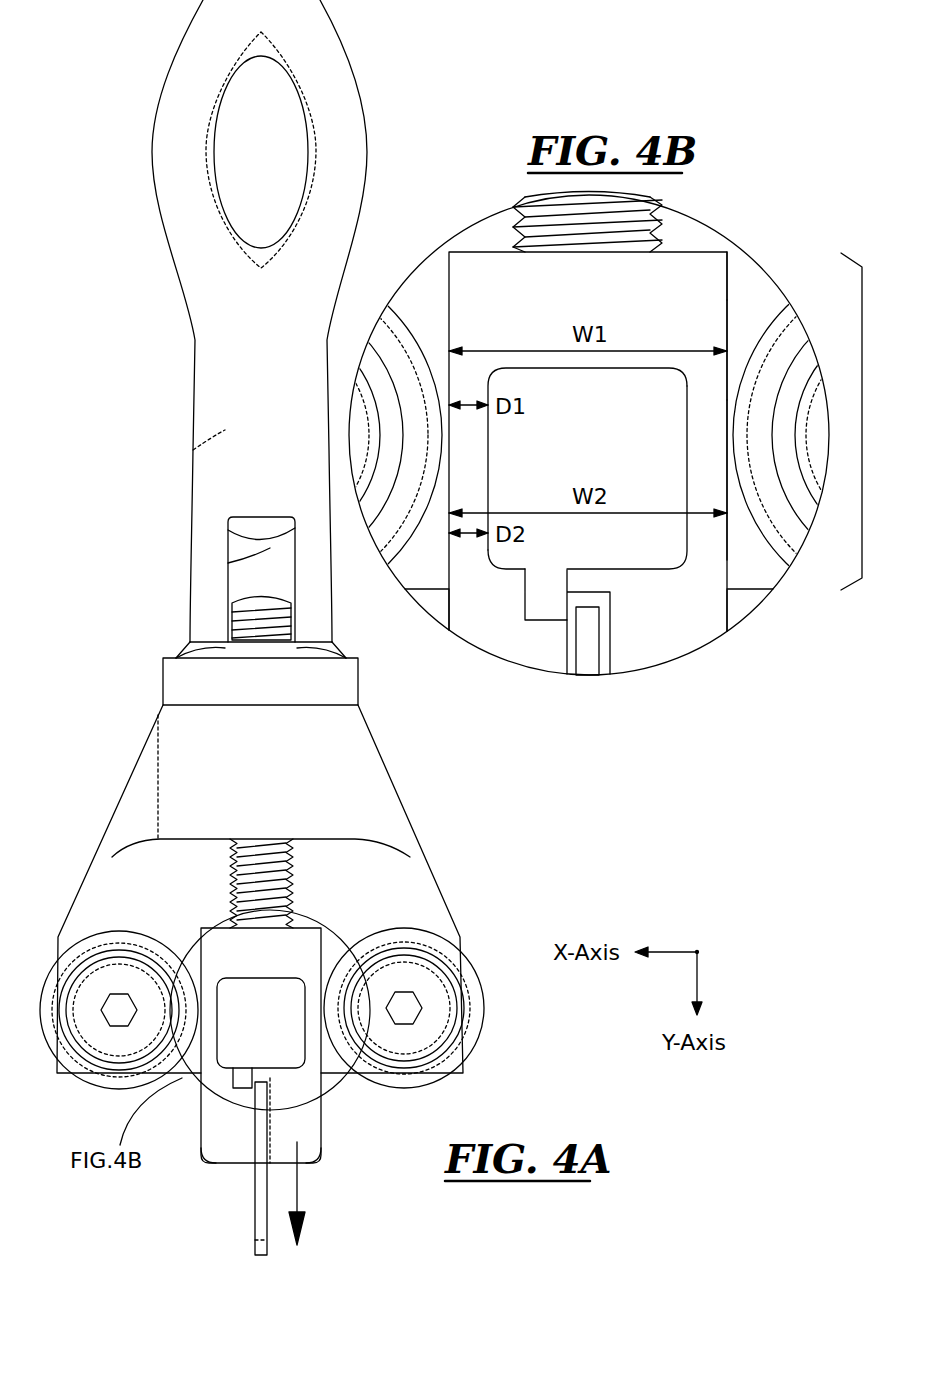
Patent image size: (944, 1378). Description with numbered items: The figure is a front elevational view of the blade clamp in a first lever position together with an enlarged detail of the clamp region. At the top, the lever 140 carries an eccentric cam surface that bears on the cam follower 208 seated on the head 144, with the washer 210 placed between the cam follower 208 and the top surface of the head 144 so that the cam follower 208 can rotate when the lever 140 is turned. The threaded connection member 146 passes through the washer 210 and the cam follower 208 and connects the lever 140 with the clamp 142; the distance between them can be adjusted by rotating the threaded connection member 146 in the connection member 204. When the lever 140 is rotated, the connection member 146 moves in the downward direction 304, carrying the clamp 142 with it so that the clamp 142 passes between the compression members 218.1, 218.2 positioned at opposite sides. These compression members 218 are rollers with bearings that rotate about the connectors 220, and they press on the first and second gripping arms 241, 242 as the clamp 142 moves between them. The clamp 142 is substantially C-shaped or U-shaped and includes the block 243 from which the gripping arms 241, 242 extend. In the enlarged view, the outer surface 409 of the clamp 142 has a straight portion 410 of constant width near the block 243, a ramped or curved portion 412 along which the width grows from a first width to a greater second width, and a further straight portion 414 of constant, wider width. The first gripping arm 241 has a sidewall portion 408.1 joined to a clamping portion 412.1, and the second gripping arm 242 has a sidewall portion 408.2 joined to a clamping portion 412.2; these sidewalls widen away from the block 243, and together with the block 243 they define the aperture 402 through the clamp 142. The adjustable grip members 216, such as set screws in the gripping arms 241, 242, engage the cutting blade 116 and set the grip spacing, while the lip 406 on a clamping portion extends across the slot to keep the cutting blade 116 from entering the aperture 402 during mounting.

In FIG. 4A, the lever 140 is at (232, 397).
In FIG. 4A, the connection member 204 is at (258, 548).
In FIG. 4A, the cam follower 208 is at (186, 652).
In FIG. 4A, the washer 210 is at (185, 683).
In FIG. 4A, the head 144 is at (436, 878).
In FIG. 4A, the threaded connection member 146 is at (253, 860).
In FIG. 4A, the first compression member 218.1 is at (80, 955).
In FIG. 4A, the second compression member 218.2 is at (488, 997).
In FIG. 4B, the compression members 218 is at (383, 548).
In FIG. 4A, the connectors 220 is at (90, 1030).
In FIG. 4A, the clamp 142 is at (310, 1122).
In FIG. 4B, the clamp 142 is at (675, 265).
In FIG. 4A, the first gripping arm 241 is at (207, 1162).
In FIG. 4A, the second gripping arm 242 is at (318, 1148).
In FIG. 4A, the cutting blade 116 is at (253, 1197).
In FIG. 4B, the cutting blade 116 is at (591, 678).
In FIG. 4A, the downward direction 304 is at (305, 1197).
In FIG. 4B, the block 243 is at (490, 287).
In FIG. 4B, the aperture 402 is at (665, 550).
In FIG. 4B, the lip 406 is at (587, 582).
In FIG. 4B, the sidewall portion of first member 408.1 is at (470, 460).
In FIG. 4B, the sidewall portion of second member 408.2 is at (700, 443).
In FIG. 4B, the outer surface 409 is at (856, 421).
In FIG. 4B, the first portion of outer surface 410 is at (725, 295).
In FIG. 4B, the ramped portion of outer surface 412 is at (762, 330).
In FIG. 4B, the first clamping portion 412.1 is at (467, 627).
In FIG. 4B, the second clamping portion 412.2 is at (665, 622).
In FIG. 4B, the second constant-width portion of outer surface 414 is at (732, 548).
In FIG. 4B, the adjustable grip members 216 is at (570, 675).